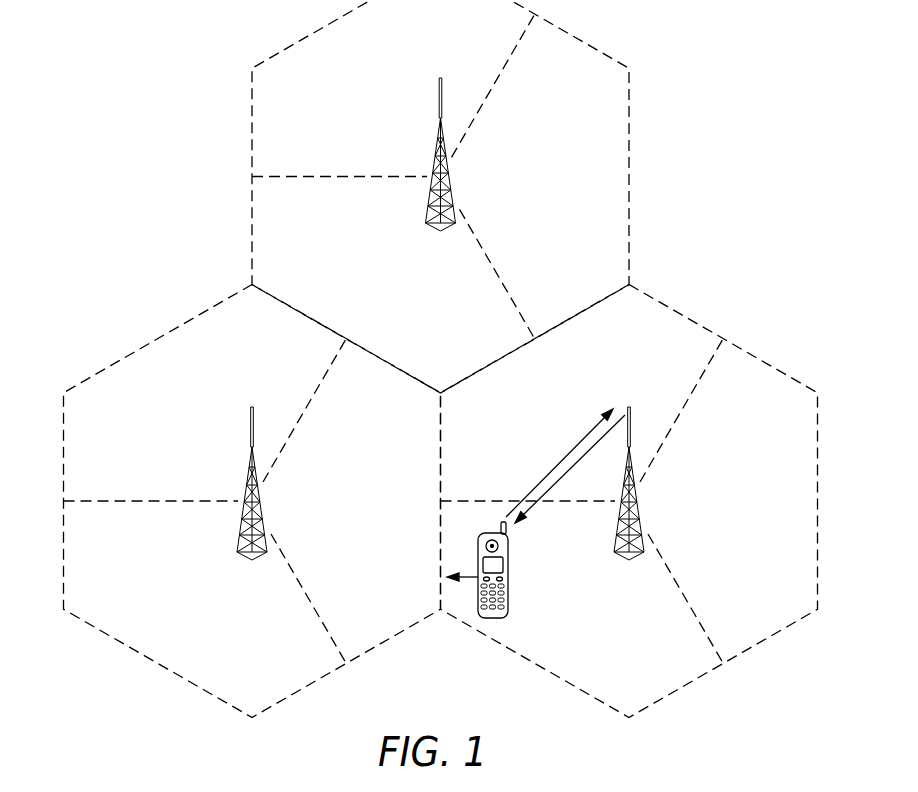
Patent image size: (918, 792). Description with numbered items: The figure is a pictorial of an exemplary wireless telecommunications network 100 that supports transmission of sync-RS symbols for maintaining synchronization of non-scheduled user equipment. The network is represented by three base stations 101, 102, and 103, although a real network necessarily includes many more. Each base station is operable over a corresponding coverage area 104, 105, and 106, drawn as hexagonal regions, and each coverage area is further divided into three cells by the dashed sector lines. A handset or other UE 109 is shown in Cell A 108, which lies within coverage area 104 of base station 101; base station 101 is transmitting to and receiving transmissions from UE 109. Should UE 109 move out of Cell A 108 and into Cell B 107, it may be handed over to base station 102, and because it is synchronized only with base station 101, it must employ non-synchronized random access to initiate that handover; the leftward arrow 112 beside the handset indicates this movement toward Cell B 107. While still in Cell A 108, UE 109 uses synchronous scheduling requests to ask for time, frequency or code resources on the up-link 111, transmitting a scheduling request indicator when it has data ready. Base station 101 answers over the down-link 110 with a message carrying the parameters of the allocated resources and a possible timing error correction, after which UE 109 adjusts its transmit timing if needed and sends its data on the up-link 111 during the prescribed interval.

The wireless telecommunications network 100 is at (103, 158).
The base station 101 is at (640, 514).
The base station 102 is at (249, 462).
The base station 103 is at (437, 137).
The coverage area 104 is at (757, 644).
The coverage area 105 is at (155, 662).
The coverage area 106 is at (629, 180).
The Cell B 107 is at (395, 610).
The Cell A 108 is at (636, 677).
The UE 109 is at (508, 584).
The down-link 110 is at (543, 498).
The up-link 111 is at (575, 447).
The movement direction of mobile station 112 is at (470, 578).